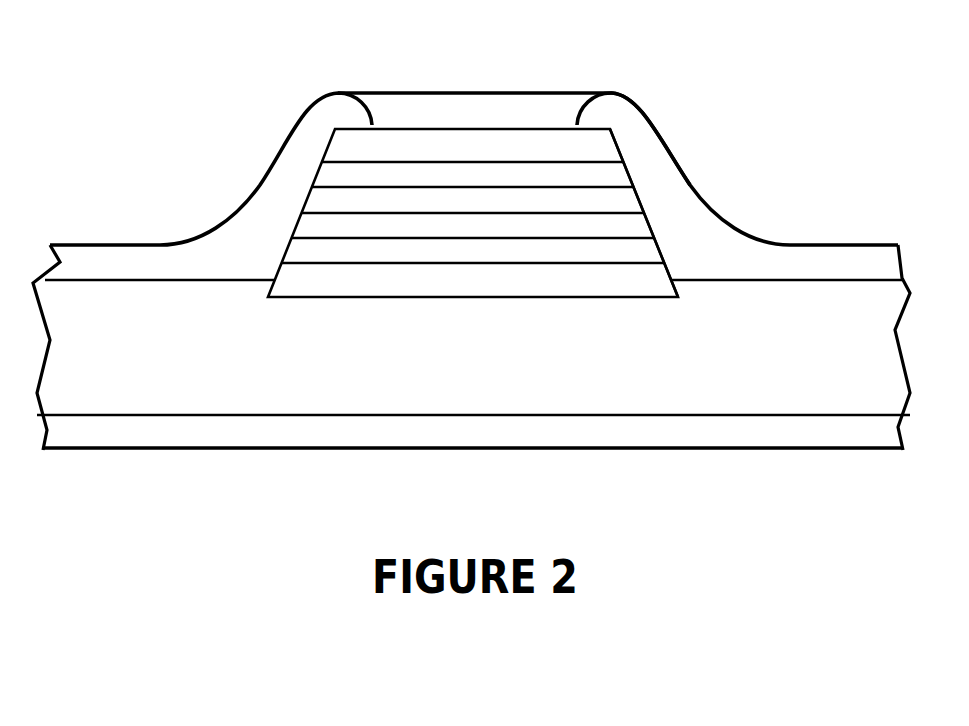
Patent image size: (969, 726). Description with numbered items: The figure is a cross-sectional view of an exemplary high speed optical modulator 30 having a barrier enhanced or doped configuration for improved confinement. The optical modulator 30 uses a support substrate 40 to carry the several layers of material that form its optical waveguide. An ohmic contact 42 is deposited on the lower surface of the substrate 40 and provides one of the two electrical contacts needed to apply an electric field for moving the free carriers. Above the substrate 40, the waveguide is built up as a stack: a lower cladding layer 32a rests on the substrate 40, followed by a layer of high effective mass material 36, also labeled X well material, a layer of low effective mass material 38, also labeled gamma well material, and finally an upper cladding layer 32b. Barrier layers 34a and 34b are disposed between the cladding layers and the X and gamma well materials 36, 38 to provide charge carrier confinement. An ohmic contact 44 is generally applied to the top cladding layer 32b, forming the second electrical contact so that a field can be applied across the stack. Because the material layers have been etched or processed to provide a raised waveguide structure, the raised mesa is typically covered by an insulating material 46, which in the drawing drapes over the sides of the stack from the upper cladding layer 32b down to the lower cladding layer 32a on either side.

The optical modulator 30 is at (283, 52).
The lower cladding layer 32a is at (657, 273).
The upper cladding layer 32b is at (333, 145).
The barrier layer 34a is at (322, 250).
The barrier layer 34b is at (603, 175).
The high effective mass material layer 36 is at (620, 225).
The low effective mass material layer 38 is at (340, 197).
The support substrate 40 is at (202, 373).
The ohmic contact 42 is at (705, 435).
The ohmic contact 44 is at (450, 93).
The insulating material 46 is at (628, 95).